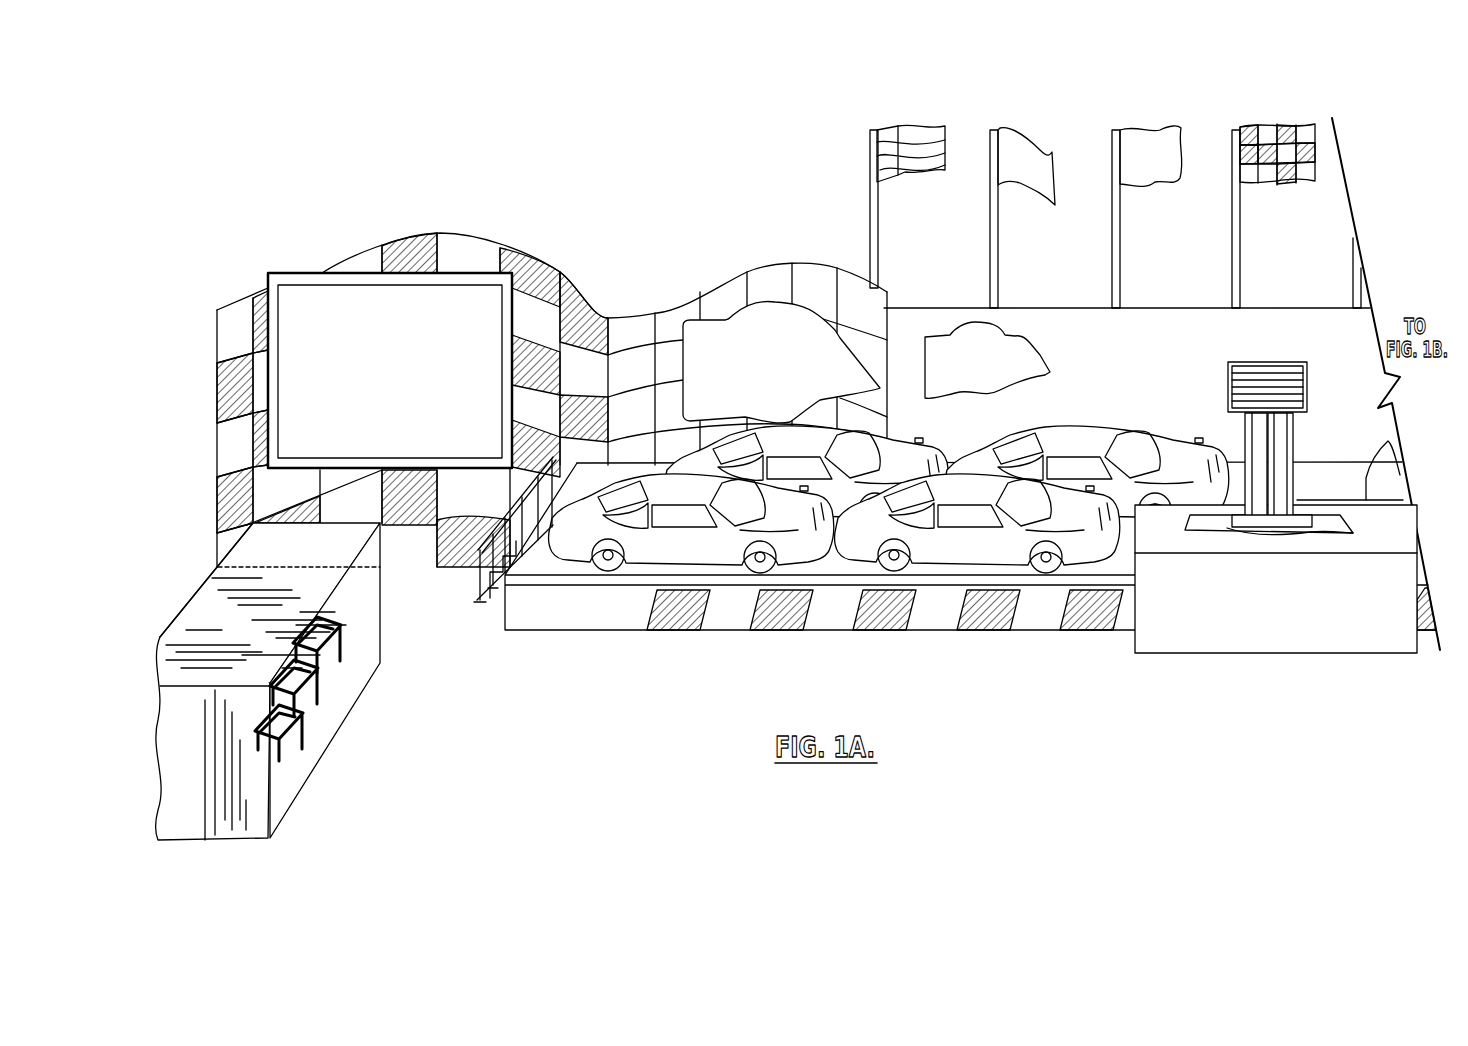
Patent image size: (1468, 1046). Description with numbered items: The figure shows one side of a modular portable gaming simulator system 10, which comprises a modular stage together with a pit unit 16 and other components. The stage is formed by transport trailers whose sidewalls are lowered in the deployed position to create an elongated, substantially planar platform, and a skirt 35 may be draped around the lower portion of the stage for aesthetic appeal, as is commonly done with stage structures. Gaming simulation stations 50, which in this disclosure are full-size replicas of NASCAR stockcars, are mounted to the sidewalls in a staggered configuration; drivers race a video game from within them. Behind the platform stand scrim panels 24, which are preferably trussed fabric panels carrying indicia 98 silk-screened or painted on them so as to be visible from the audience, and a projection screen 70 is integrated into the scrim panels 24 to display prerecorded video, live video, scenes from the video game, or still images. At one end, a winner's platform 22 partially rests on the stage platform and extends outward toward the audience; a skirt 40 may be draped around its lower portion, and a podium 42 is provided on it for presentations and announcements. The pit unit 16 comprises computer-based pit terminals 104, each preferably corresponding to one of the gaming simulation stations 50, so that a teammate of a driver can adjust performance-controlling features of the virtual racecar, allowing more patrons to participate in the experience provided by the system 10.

The modular portable gaming simulator system 10 is at (805, 476).
The pit unit 16 is at (398, 697).
The winner's platform 22 is at (1390, 528).
The scrim panels 24 is at (733, 290).
The skirt 35 is at (548, 618).
The skirt 40 is at (1161, 654).
The podium 42 is at (1293, 362).
The gaming simulation stations 50 is at (658, 560).
The projection screens 70 is at (306, 247).
The indicia 98 is at (882, 335).
The pit terminals 104 is at (320, 743).